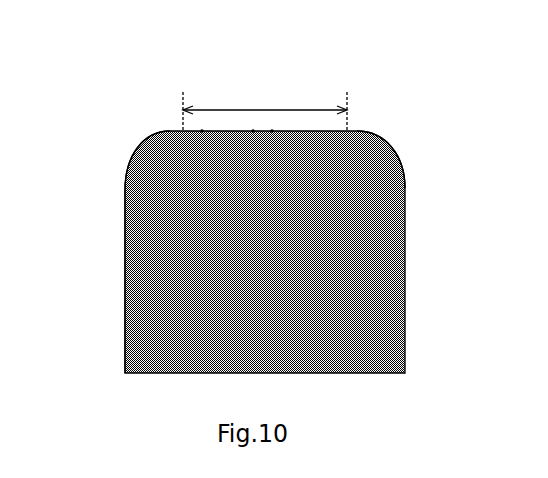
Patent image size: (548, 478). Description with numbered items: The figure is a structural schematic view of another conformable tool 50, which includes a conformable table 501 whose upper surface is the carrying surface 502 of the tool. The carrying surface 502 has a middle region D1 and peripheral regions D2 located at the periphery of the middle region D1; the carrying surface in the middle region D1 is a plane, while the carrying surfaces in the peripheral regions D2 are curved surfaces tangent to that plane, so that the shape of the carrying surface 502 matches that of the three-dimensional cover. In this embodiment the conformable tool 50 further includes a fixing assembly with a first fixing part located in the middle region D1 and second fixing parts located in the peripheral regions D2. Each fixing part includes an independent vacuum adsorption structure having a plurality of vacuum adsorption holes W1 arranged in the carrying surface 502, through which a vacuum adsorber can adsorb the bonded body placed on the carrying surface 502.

The conformable tool 50 is at (242, 195).
The conformable table 501 is at (172, 265).
The carrying surface 502 is at (364, 117).
The middle region D1 is at (265, 99).
The peripheral regions D2 is at (142, 151).
The vacuum adsorption holes W1 is at (112, 170).